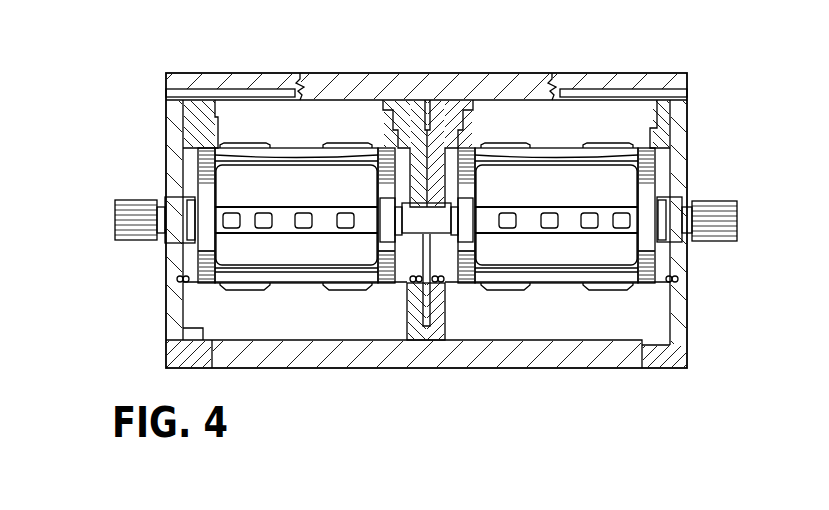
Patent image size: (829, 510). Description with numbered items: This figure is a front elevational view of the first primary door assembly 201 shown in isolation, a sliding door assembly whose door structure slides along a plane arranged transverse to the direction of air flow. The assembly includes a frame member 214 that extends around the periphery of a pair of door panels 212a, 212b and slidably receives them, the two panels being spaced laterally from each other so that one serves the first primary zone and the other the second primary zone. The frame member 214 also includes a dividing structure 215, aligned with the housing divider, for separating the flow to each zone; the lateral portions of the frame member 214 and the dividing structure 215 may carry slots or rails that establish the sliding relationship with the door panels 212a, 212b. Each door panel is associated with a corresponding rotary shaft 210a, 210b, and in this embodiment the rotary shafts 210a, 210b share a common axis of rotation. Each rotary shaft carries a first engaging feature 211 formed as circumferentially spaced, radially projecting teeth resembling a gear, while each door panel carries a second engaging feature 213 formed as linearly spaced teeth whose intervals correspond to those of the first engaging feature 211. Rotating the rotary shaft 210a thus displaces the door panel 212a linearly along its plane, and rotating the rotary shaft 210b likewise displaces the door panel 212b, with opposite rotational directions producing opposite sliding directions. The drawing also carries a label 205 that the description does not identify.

The first primary door assembly 201 is at (120, 80).
The housing top portion 205 is at (361, 4).
The rotary shaft 210a is at (132, 200).
The rotary shaft 210b is at (722, 201).
The first engaging feature 211 is at (205, 242).
The door panel 212a is at (252, 182).
The door panel 212b is at (510, 178).
The second engaging feature 213 is at (207, 281).
The frame member 214 is at (645, 82).
The dividing structure 215 is at (438, 125).